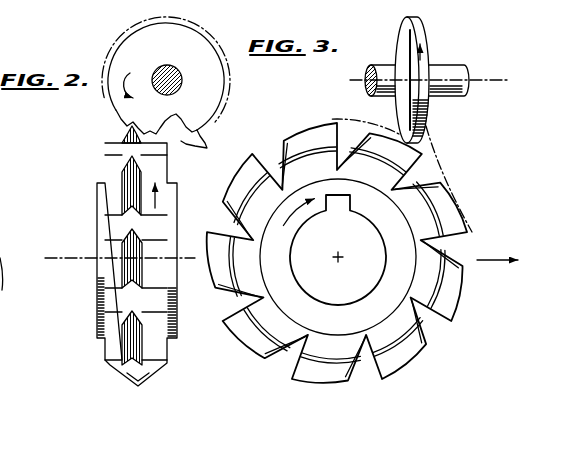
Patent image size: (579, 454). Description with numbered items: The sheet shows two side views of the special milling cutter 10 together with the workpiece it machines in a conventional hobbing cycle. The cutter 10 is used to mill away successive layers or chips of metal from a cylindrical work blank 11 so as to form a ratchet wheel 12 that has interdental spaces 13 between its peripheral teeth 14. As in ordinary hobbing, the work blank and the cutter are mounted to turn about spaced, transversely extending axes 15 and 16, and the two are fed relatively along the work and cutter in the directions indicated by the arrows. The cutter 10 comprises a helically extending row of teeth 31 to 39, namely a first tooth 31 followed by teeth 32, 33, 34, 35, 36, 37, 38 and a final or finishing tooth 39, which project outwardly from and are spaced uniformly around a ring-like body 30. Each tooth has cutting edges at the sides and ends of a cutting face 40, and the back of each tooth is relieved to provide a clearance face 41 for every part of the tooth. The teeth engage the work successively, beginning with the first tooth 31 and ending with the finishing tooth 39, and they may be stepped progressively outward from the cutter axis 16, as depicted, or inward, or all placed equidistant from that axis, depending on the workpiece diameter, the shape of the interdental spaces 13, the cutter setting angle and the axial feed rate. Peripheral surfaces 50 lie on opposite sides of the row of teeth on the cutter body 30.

In FIG. 2, the milling cutter 10 is at (172, 177).
In FIG. 3, the milling cutter 10 is at (281, 360).
In FIG. 3, the cylindrical work blank 11 is at (421, 112).
In FIG. 2, the ratchet wheel 12 is at (210, 92).
In FIG. 2, the interdental spaces 13 is at (192, 143).
In FIG. 2, the peripheral teeth 14 is at (183, 125).
In FIG. 2, the work blank axis 15 is at (176, 74).
In FIG. 3, the work blank axis 15 is at (486, 82).
In FIG. 2, the cutter axis 16 is at (78, 260).
In FIG. 3, the cutter axis 16 is at (340, 256).
In FIG. 2, the ring-like body 30 is at (100, 202).
In FIG. 3, the ring-like body 30 is at (280, 265).
In FIG. 2, the first tooth 31 is at (123, 140).
In FIG. 3, the first tooth 31 is at (317, 130).
In FIG. 3, the cutter tooth 32 is at (246, 177).
In FIG. 3, the cutter tooth 33 is at (218, 277).
In FIG. 3, the cutter tooth 34 is at (253, 338).
In FIG. 3, the cutter tooth 35 is at (318, 374).
In FIG. 3, the cutter tooth 36 is at (413, 349).
In FIG. 3, the cutter tooth 37 is at (460, 293).
In FIG. 3, the cutter tooth 38 is at (444, 208).
In FIG. 2, the finishing tooth 39 is at (128, 127).
In FIG. 3, the finishing tooth 39 is at (405, 156).
In FIG. 3, the cutting faces 40 is at (270, 172).
In FIG. 2, the clearance face 41 is at (128, 185).
In FIG. 3, the clearance face 41 is at (297, 143).
In FIG. 2, the peripheral surfaces 50 is at (115, 323).